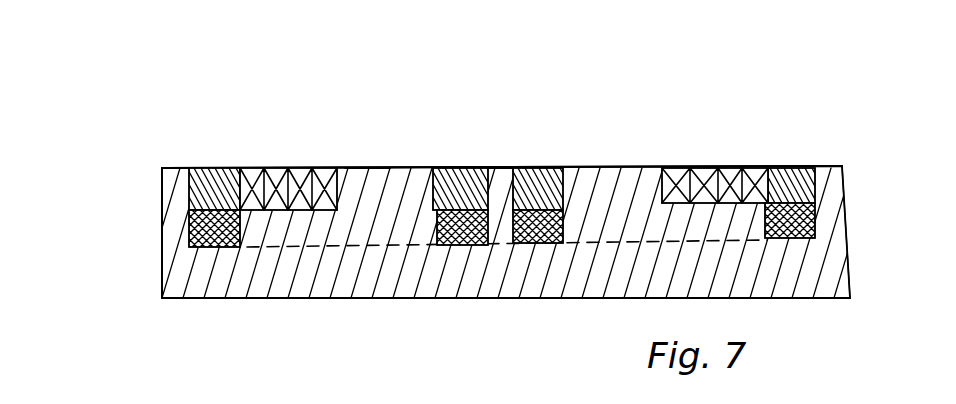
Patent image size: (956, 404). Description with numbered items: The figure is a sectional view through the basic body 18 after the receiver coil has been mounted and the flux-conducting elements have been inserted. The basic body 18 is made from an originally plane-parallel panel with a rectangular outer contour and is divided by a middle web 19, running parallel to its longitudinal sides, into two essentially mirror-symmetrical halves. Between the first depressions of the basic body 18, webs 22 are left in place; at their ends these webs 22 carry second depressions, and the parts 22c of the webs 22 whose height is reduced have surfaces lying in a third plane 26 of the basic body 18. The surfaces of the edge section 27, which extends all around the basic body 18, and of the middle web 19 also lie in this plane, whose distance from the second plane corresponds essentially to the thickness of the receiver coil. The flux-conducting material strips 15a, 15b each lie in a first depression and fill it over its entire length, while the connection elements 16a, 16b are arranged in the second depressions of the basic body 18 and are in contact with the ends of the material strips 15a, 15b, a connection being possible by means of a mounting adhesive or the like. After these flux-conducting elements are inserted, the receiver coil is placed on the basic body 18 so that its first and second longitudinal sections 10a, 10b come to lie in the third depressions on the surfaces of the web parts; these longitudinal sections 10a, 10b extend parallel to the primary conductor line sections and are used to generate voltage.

The basic body 18 is at (492, 302).
The webs 22 is at (635, 167).
The parts of the webs 22c is at (365, 167).
The third plane 26 is at (170, 165).
The edge section 27 is at (162, 185).
The connection element 16a is at (213, 167).
The connection element 16b is at (547, 167).
The first longitudinal sections 10a is at (278, 167).
The second longitudinal sections 10b is at (728, 167).
The material strip 15a is at (213, 232).
The material strip 15b is at (543, 235).
The middle web 19 is at (508, 167).